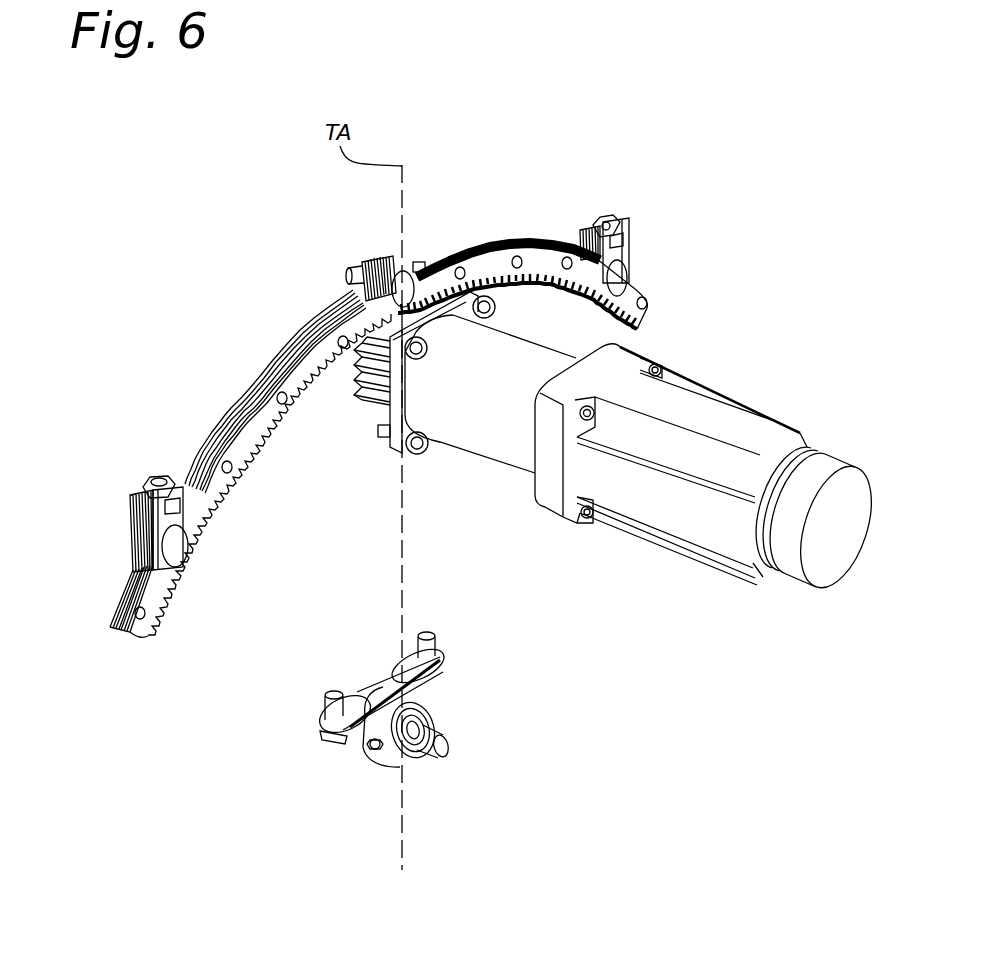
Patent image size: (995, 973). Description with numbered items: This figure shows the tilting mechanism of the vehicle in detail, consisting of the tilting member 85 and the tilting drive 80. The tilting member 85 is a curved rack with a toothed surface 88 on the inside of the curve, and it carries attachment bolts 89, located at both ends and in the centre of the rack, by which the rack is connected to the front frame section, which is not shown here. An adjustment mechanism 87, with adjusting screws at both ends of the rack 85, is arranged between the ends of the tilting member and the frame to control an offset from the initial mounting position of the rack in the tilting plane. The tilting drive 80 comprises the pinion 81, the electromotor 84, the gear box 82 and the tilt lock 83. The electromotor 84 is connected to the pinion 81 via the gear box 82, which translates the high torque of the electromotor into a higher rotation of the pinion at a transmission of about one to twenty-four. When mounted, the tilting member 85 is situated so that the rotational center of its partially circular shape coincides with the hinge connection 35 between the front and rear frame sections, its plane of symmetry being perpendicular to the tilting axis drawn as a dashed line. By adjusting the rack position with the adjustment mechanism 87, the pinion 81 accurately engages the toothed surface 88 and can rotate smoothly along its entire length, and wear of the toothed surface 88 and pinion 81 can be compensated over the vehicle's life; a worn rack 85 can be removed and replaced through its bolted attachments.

The hinge connection 35 is at (365, 738).
The tilting drive 80 is at (694, 366).
The pinion 81 is at (362, 400).
The gear box 82 is at (492, 430).
The tilt lock 83 is at (790, 555).
The electromotor 84 is at (743, 430).
The tilting member 85 is at (514, 222).
The adjustment mechanism 87 is at (605, 216).
The toothed surface 88 is at (253, 462).
The attachment bolts 89 is at (402, 290).